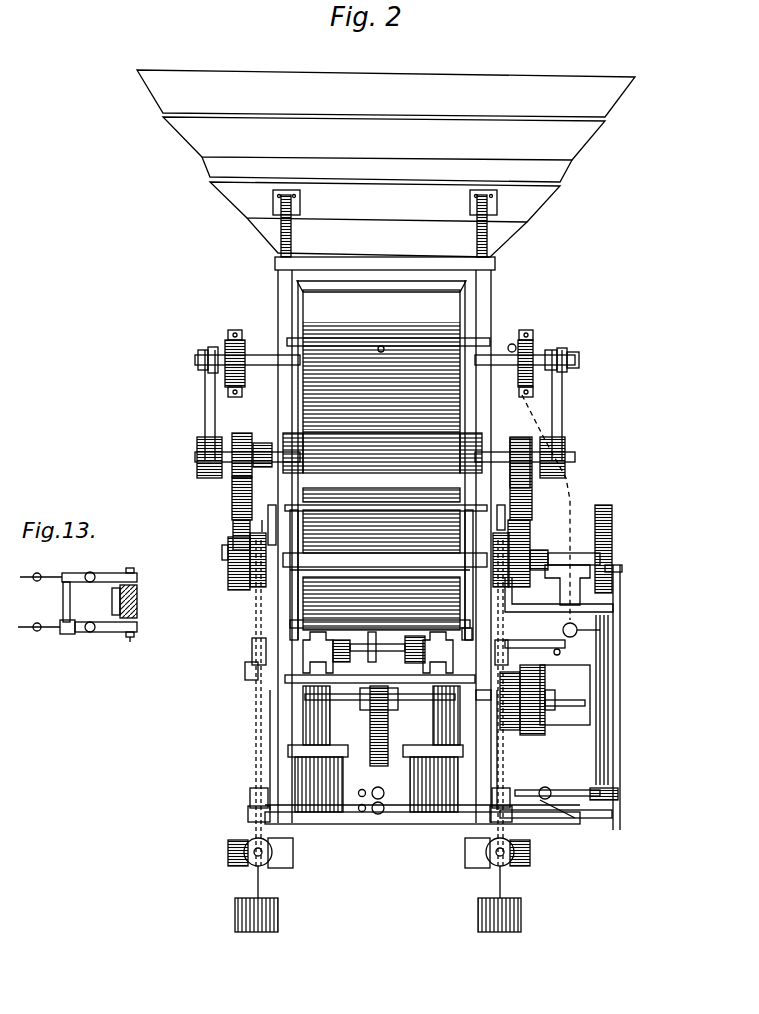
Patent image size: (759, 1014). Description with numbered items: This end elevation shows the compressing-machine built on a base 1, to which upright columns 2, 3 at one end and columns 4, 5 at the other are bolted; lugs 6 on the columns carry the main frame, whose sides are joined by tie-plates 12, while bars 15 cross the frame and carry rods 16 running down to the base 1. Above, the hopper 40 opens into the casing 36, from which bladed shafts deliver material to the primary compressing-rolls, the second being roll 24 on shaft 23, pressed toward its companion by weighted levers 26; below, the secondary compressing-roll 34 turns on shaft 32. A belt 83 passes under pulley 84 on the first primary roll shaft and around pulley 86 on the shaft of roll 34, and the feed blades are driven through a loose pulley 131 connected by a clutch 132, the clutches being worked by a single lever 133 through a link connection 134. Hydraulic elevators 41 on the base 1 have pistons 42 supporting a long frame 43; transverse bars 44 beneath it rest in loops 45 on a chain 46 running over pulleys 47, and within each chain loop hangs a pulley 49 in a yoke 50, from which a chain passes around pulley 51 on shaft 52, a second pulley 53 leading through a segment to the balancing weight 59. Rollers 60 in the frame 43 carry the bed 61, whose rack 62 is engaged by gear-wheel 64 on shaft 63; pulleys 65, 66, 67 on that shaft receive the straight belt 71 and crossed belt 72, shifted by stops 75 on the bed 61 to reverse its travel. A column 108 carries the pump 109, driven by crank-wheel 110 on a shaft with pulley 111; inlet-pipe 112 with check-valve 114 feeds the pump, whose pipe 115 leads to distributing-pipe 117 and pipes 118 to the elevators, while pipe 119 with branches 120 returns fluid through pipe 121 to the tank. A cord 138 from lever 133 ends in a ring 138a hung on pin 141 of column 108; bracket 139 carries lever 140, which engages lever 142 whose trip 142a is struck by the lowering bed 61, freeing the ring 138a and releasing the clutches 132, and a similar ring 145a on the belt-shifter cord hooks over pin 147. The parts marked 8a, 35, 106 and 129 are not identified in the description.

In FIG. 2, the base 1 is at (370, 824).
In FIG. 2, the upright column 2 is at (278, 758).
In FIG. 2, the upright column 3 is at (554, 646).
In FIG. 2, the column 4 is at (257, 525).
In FIG. 2, the column 5 is at (565, 690).
In FIG. 2, the lug 6 is at (379, 575).
In FIG. 2, the lower roller 8a is at (381, 603).
In FIG. 2, the tie-plate 12 is at (356, 568).
In FIG. 2, the bar 15 is at (385, 558).
In FIG. 2, the rod 16 is at (508, 766).
In FIG. 2, the shaft 23 is at (222, 450).
In FIG. 2, the second primary compressing-roll 24 is at (381, 453).
In FIG. 2, the weighted lever 26 is at (300, 452).
In FIG. 2, the shaft 32 is at (226, 556).
In FIG. 2, the secondary compressing-roll 34 is at (381, 531).
In FIG. 2, the arm 35 is at (381, 519).
In FIG. 2, the casing 36 is at (381, 356).
In FIG. 2, the hopper 40 is at (386, 163).
In FIG. 2, the hydraulic jack or elevator 41 is at (375, 778).
In FIG. 2, the piston 42 is at (381, 715).
In FIG. 2, the frame 43 is at (378, 652).
In FIG. 2, the bar 44 is at (245, 672).
In FIG. 2, the loop 45 is at (252, 650).
In FIG. 2, the chain 46 is at (255, 723).
In FIG. 2, the pulley 47 is at (252, 588).
In FIG. 2, the pulley 49 is at (250, 793).
In FIG. 2, the yoke 50 is at (248, 812).
In FIG. 2, the pulley 51 is at (250, 866).
In FIG. 2, the shaft 52 is at (226, 852).
In FIG. 2, the second pulley 53 is at (248, 842).
In FIG. 2, the weight 59 is at (378, 899).
In FIG. 2, the roller 60 is at (405, 651).
In FIG. 2, the bed 61 is at (290, 624).
In FIG. 2, the rack 62 is at (342, 662).
In FIG. 2, the shaft 63 is at (404, 702).
In FIG. 2, the gear-wheel 64 is at (370, 722).
In FIG. 2, the pulley 65 is at (478, 695).
In FIG. 2, the pulley 66 is at (532, 707).
In FIG. 2, the pulley 67 is at (540, 716).
In FIG. 2, the straight belt 71 is at (550, 717).
In FIG. 2, the crossed belt 72 is at (510, 710).
In FIG. 2, the stop 75 is at (471, 627).
In FIG. 2, the belt 83 is at (232, 496).
In FIG. 2, the pulley 84 is at (260, 443).
In FIG. 2, the pulley 86 is at (232, 533).
In FIG. 2, the roller 106 is at (292, 487).
In FIG. 2, the column 108 is at (580, 752).
In FIG. 13, the column 108 is at (137, 603).
In FIG. 2, the pump 109 is at (603, 770).
In FIG. 2, the crank-wheel 110 is at (612, 528).
In FIG. 2, the pulley 111 is at (565, 549).
In FIG. 2, the inlet-pipe 112 is at (616, 794).
In FIG. 2, the check-valve 114 is at (560, 808).
In FIG. 2, the pipe 115 is at (555, 788).
In FIG. 2, the distributing-pipe 117 is at (372, 785).
In FIG. 2, the pipe 118 is at (352, 784).
In FIG. 2, the pipe 119 is at (380, 814).
In FIG. 2, the branch 120 is at (358, 812).
In FIG. 2, the pipe 121 is at (612, 816).
In FIG. 2, the belt 129 is at (368, 405).
In FIG. 2, the pulley 131 is at (203, 350).
In FIG. 2, the clutch 132 is at (375, 356).
In FIG. 2, the lever 133 is at (410, 346).
In FIG. 2, the link connection 134 is at (338, 345).
In FIG. 2, the cord or chain 138 is at (511, 343).
In FIG. 2, the ring 138a is at (578, 627).
In FIG. 13, the ring 138a is at (137, 629).
In FIG. 2, the bracket 139 is at (560, 612).
In FIG. 13, the bracket 139 is at (86, 602).
In FIG. 2, the lever 140 is at (535, 636).
In FIG. 13, the lever 140 is at (106, 634).
In FIG. 2, the pin 141 is at (578, 631).
In FIG. 13, the pin 141 is at (130, 638).
In FIG. 13, the lever 142 is at (56, 634).
In FIG. 13, the trip 142a is at (38, 597).
In FIG. 13, the ring 145a is at (99, 559).
In FIG. 13, the pin 147 is at (131, 568).